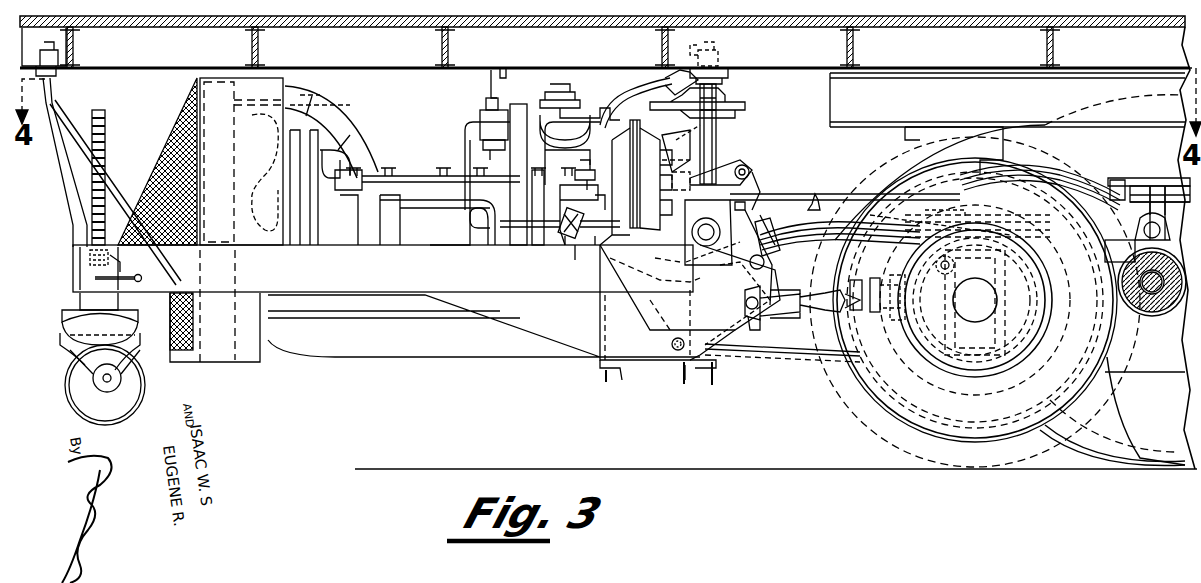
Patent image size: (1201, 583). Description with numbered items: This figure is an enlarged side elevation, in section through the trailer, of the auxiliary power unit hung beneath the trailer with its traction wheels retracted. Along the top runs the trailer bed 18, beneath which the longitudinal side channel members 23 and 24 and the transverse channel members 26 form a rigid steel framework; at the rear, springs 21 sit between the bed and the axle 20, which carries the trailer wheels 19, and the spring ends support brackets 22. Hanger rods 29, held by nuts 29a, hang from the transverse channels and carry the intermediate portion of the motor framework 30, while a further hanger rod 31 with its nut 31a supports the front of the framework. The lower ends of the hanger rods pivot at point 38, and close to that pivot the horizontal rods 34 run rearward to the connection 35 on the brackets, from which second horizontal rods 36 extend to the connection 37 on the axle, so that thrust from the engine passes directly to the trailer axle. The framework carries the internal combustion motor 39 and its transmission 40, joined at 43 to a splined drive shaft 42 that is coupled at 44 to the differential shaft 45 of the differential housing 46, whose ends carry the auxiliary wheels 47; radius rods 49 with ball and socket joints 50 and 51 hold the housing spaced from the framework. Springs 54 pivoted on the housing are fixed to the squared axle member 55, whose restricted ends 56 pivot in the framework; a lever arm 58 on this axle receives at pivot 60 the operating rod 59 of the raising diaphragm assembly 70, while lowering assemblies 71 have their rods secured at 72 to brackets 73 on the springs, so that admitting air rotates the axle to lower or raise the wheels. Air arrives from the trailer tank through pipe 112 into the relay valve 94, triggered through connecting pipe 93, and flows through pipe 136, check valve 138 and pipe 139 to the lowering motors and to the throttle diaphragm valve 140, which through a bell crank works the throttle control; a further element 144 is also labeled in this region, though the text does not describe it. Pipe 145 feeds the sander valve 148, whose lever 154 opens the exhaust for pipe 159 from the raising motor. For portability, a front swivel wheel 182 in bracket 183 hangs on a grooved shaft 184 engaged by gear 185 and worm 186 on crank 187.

The trailer bed 18 is at (998, 25).
The wheels 19 is at (1112, 411).
The axle 20 is at (1150, 312).
The springs 21 is at (1078, 185).
The brackets 22 is at (1007, 167).
The side channel member 23 is at (1007, 100).
The side channel member 24 is at (350, 62).
The transverse channel members 26 is at (75, 50).
The hanger rods 29 is at (718, 140).
The nut 29a is at (720, 57).
The motor framework 30 is at (383, 303).
The hanger rod 31 is at (55, 104).
The nut 31a is at (44, 52).
The rods 34 is at (805, 194).
The connection 35 is at (885, 215).
The second horizontal rod 36 is at (1020, 240).
The connection 37 is at (1147, 224).
The pivot point 38 is at (688, 240).
The internal combustion motor 39 is at (345, 357).
The transmission 40 is at (718, 364).
The drive shaft 42 is at (808, 290).
The connection 43 is at (763, 328).
The connection 44 is at (862, 280).
The differential shaft 45 is at (900, 275).
The differential housing 46 is at (1035, 352).
The wheels 47 is at (982, 430).
The radius rods 49 is at (795, 360).
The ball and socket joint 50 is at (676, 330).
The ball and socket joint 51 is at (905, 345).
The springs 54 is at (838, 222).
The squared axle member 55 is at (775, 254).
The restricted ends 56 is at (772, 273).
The lever arm 58 is at (690, 302).
The operating rod 59 is at (672, 142).
The pivot 60 is at (670, 282).
The diaphragm assembly 70 is at (740, 96).
The diaphragm assemblies 71 is at (622, 150).
The connection 72 is at (752, 170).
The brackets 73 is at (760, 190).
The connecting pipe 93 is at (505, 70).
The relay valve 94 is at (480, 118).
The pipe 112 is at (498, 148).
The pipe 136 is at (462, 212).
The check valve 138 is at (568, 236).
The pipe 139 is at (600, 232).
The diaphragm valve 140 is at (588, 165).
The governor 144 is at (579, 214).
The pipe 145 is at (565, 85).
The valve 148 is at (572, 92).
The lever 154 is at (590, 102).
The pipe 159 is at (610, 108).
The front swivel wheel 182 is at (68, 390).
The bracket 183 is at (62, 335).
The grooved shaft 184 is at (105, 132).
The gear 185 is at (88, 252).
The worm 186 is at (92, 278).
The crank 187 is at (131, 262).